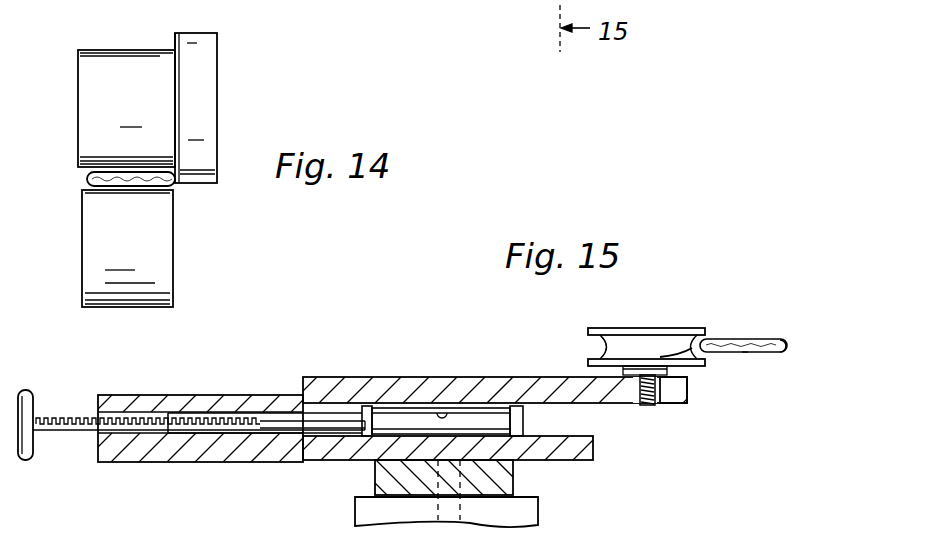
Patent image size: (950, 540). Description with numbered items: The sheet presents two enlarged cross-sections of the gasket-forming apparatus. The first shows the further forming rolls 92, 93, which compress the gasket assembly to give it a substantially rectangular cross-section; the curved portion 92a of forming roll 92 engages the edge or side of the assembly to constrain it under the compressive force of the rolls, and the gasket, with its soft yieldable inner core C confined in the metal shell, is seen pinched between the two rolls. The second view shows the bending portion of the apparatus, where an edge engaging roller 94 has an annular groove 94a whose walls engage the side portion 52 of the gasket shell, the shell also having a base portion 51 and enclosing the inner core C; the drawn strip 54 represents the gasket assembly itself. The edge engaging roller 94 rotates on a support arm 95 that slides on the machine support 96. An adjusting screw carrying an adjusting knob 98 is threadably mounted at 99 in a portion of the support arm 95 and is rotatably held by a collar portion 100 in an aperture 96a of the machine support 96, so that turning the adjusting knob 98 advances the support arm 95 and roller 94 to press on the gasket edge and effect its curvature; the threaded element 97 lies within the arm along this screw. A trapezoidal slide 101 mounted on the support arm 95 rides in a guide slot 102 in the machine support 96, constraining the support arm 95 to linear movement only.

In FIG. 14, the forming roll 92 is at (205, 71).
In FIG. 14, the curved portion 92a is at (176, 50).
In FIG. 14, the forming roll 93 is at (155, 241).
In FIG. 15, the adjusting knob 98 is at (30, 390).
In FIG. 15, the threaded mounting 99 is at (115, 418).
In FIG. 15, the support arm 95 is at (168, 396).
In FIG. 15, the tube 97 is at (218, 413).
In FIG. 15, the collar portion 100 is at (393, 418).
In FIG. 15, the aperture 96a is at (447, 411).
In FIG. 15, the slide 101 is at (593, 450).
In FIG. 15, the guide slot 102 is at (375, 474).
In FIG. 15, the machine support 96 is at (500, 479).
In FIG. 15, the edge engaging roller 94 is at (627, 328).
In FIG. 15, the annular groove 94a is at (600, 346).
In FIG. 15, the cord 54 is at (742, 339).
In FIG. 15, the side portions 52 is at (781, 344).
In FIG. 15, the base portion 51 is at (776, 353).
In FIG. 15, the inner core C is at (745, 355).